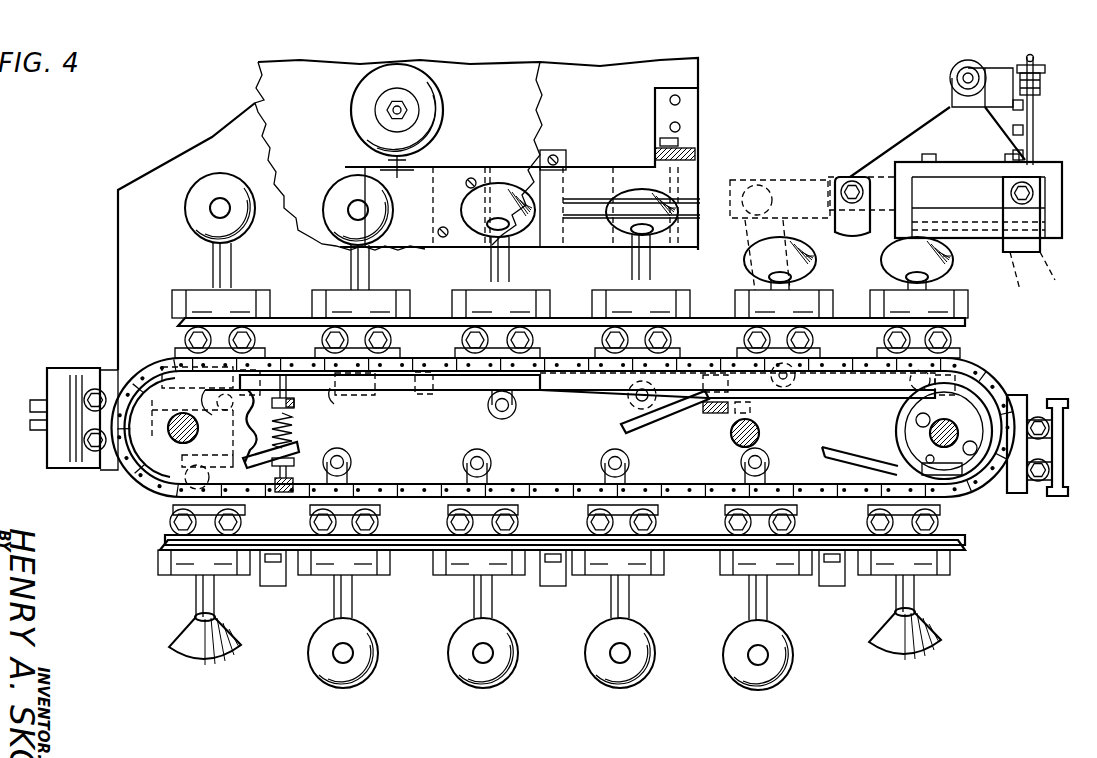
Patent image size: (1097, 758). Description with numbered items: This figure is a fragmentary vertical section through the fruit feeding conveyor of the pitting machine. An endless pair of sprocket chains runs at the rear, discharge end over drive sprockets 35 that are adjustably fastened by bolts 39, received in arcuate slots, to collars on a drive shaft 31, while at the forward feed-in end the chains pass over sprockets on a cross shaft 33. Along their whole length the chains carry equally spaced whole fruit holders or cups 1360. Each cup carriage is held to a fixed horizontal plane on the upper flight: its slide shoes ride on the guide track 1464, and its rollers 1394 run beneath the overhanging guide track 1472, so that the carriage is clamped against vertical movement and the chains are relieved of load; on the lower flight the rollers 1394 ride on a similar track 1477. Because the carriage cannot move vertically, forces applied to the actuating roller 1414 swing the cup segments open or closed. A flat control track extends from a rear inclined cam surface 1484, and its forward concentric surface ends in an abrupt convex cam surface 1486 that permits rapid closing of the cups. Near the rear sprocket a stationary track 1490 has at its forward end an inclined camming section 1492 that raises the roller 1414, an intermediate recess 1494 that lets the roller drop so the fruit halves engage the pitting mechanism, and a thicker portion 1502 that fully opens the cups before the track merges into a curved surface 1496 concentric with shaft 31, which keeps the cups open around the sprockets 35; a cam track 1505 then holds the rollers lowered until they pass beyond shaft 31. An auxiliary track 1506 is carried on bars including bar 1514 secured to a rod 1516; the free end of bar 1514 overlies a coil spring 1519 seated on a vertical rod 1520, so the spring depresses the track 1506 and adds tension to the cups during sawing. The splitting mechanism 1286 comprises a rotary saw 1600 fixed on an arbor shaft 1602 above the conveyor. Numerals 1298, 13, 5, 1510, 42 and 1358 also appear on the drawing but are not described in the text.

The rotary saw 1600 is at (258, 92).
The arbor shaft 1602 is at (408, 110).
The splitting or sawing mechanism 1286 is at (548, 86).
The pivot arm assembly 1298 is at (898, 122).
The section line 13 is at (307, 192).
The section line 5 is at (410, 440).
The fruit holders 1360 is at (258, 216).
The overhanging guide track 1472 is at (286, 296).
The mounting nuts 1510 is at (283, 358).
The track portion 1502 is at (966, 366).
The end bracket 42 is at (135, 474).
The cross shaft 33 is at (192, 424).
The bar 1514 is at (197, 379).
The convex cam surface 1486 is at (197, 426).
The rod 1516 is at (357, 388).
The auxiliary control track 1506 is at (298, 418).
The coil spring 1519 is at (296, 437).
The vertical rod 1520 is at (252, 470).
The guide track 1464 is at (448, 388).
The recessed portion 1494 is at (855, 398).
The actuating roller 1414 is at (499, 415).
The inclined cam surface 1484 is at (546, 465).
The inclined camming section 1492 is at (622, 427).
The pivot pin 1358 is at (733, 438).
The track 1490 is at (784, 390).
The drive shaft 31 is at (930, 433).
The drive sprockets 35 is at (893, 440).
The curved track surface 1496 is at (962, 395).
The bolts 39 is at (975, 445).
The cam track 1505 is at (832, 460).
The rollers 1394 is at (660, 548).
The lower track 1477 is at (420, 548).